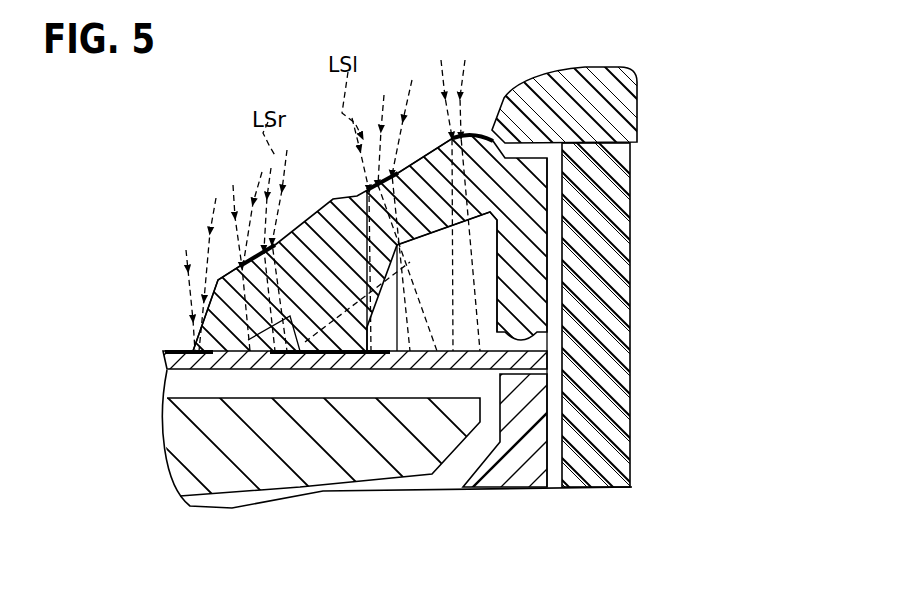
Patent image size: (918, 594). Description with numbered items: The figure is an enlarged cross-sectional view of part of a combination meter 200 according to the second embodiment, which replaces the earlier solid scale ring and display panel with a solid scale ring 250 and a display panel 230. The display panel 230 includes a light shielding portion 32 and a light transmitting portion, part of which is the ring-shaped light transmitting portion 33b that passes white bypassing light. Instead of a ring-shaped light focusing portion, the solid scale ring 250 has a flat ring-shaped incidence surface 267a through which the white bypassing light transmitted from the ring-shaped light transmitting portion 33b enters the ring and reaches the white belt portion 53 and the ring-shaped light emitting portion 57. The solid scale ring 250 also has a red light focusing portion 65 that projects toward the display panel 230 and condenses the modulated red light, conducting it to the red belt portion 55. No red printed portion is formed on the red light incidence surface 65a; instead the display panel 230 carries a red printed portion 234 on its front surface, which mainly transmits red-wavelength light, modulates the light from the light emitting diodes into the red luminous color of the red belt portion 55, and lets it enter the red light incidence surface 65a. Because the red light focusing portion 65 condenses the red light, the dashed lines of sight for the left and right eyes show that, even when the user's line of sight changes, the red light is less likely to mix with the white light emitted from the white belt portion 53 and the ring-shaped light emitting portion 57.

The combination meter 200 is at (652, 104).
The solid scale ring 250 is at (523, 202).
The ring-shaped incidence surface 267a is at (435, 240).
The ring-shaped light transmitting portion 33b is at (483, 370).
The light shielding portion 32 is at (182, 350).
The display panel 230 is at (206, 377).
The red printed portion 234 is at (293, 360).
The red light focusing portion 65 is at (358, 330).
The red light incidence surface 65a is at (325, 354).
The white belt portion 53 is at (210, 280).
The red belt portion 55 is at (333, 198).
The ring-shaped light emitting portion 57 is at (432, 152).